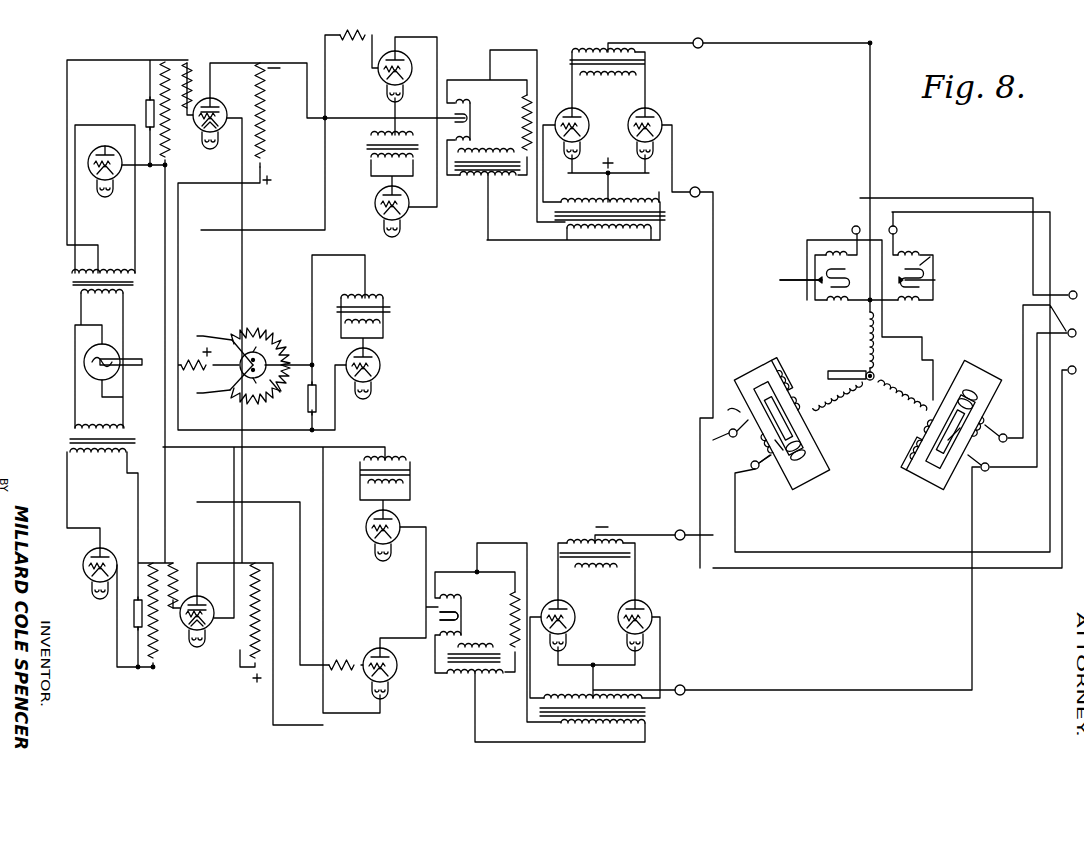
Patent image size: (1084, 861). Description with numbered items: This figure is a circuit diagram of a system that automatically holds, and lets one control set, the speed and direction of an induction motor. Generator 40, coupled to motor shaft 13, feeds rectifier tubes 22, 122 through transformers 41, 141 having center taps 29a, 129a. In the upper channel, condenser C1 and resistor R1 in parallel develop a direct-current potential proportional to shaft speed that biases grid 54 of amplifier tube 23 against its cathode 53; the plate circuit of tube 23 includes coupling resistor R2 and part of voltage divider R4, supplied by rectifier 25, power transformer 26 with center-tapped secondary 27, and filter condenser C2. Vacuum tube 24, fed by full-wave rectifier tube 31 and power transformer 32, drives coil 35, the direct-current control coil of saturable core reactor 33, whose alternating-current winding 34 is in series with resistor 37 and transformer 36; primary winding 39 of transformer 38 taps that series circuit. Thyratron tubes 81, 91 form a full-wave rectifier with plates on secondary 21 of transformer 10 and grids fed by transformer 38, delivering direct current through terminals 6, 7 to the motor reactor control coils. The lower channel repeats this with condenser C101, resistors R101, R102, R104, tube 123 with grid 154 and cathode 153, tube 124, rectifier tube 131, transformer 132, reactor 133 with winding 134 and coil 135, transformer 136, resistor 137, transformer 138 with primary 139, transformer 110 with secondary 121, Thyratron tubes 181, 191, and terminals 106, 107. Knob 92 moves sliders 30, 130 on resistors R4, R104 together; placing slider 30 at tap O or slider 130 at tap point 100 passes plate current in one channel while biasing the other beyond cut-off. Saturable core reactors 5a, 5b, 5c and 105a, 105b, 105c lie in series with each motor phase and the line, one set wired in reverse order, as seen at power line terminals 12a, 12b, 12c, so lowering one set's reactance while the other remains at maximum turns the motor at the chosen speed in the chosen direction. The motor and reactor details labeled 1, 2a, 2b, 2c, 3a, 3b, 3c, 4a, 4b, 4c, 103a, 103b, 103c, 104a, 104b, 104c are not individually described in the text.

The pivot 1 is at (865, 374).
The motor coil 2a is at (842, 410).
The motor coil 2b is at (899, 376).
The motor coil 2c is at (864, 344).
The armature coil 3a is at (813, 464).
The armature coil 3b is at (964, 405).
The armature coil 3c is at (846, 281).
The winding terminal 4a is at (830, 436).
The winding terminal 4b is at (951, 390).
The winding 4c is at (838, 236).
The saturable core reactor 5a is at (798, 470).
The saturable core reactor 5b is at (950, 374).
The saturable core reactor 5c is at (791, 282).
The terminal 6 is at (705, 39).
The terminal 7 is at (700, 187).
The transformer 10 is at (643, 62).
The power line terminal 12a is at (1063, 360).
The power line terminal 12b is at (1064, 322).
The power line terminal 12c is at (1063, 283).
The motor shaft 13 is at (139, 359).
The secondary winding 21 is at (635, 44).
The rectifier tube 22 is at (114, 153).
The amplifier tube 23 is at (214, 99).
The vacuum tube 24 is at (406, 64).
The rectifier 25 is at (382, 363).
The power transformer 26 is at (391, 310).
The center-tapped secondary 27 is at (356, 296).
The center tap 29a is at (104, 269).
The slider 30 is at (274, 338).
The rectifier tube 31 is at (374, 204).
The power transformer 32 is at (368, 149).
The saturable core reactor 33 is at (480, 120).
The alternating-current winding 34 is at (489, 139).
The direct-current control coil 35 is at (452, 119).
The transformer 36 is at (460, 180).
The resistor 37 is at (526, 103).
The transformer 38 is at (666, 216).
The primary winding 39 is at (629, 230).
The generator 40 is at (106, 344).
The transformer 41 is at (131, 283).
The cathode 53 is at (220, 134).
The grid 54 is at (227, 110).
The Thyratron tube 81 is at (584, 130).
The Thyratron tube 91 is at (630, 121).
The control knob 92 is at (193, 350).
The tap point 100 is at (228, 392).
The armature 103a is at (775, 418).
The armature 103b is at (957, 431).
The armature 103c is at (928, 267).
The winding 104a is at (786, 362).
The winding 104b is at (990, 480).
The winding 104c is at (906, 256).
The saturable core reactor 105a is at (752, 370).
The saturable core reactor 105b is at (925, 472).
The saturable core reactor 105c is at (934, 284).
The terminal 106 is at (678, 529).
The terminal 107 is at (684, 684).
The transformer 110 is at (632, 555).
The secondary winding 121 is at (586, 534).
The rectifier tube 122 is at (84, 557).
The amplifier tube 123 is at (199, 596).
The vacuum tube 124 is at (389, 658).
The center tap 129a is at (100, 454).
The slider 130 is at (266, 368).
The rectifier tube 131 is at (400, 523).
The power transformer 132 is at (411, 473).
The saturable core reactor 133 is at (466, 614).
The alternating-current winding 134 is at (468, 634).
The direct-current control coil 135 is at (438, 615).
The transformer 136 is at (441, 677).
The resistor 137 is at (515, 598).
The transformer 138 is at (646, 714).
The primary winding 139 is at (555, 726).
The transformer 141 is at (128, 438).
The cathode 153 is at (202, 622).
The grid 154 is at (210, 599).
The Thyratron tube 181 is at (572, 621).
The Thyratron tube 191 is at (622, 600).
The condenser C1 is at (146, 108).
The filter condenser C2 is at (309, 400).
The condenser C101 is at (133, 603).
The resistor R1 is at (168, 139).
The coupling resistor R2 is at (264, 100).
The voltage divider R4 is at (255, 343).
The resistor R101 is at (160, 665).
The coupling resistor R102 is at (250, 650).
The resistor R104 is at (258, 400).
The tap point O is at (230, 332).